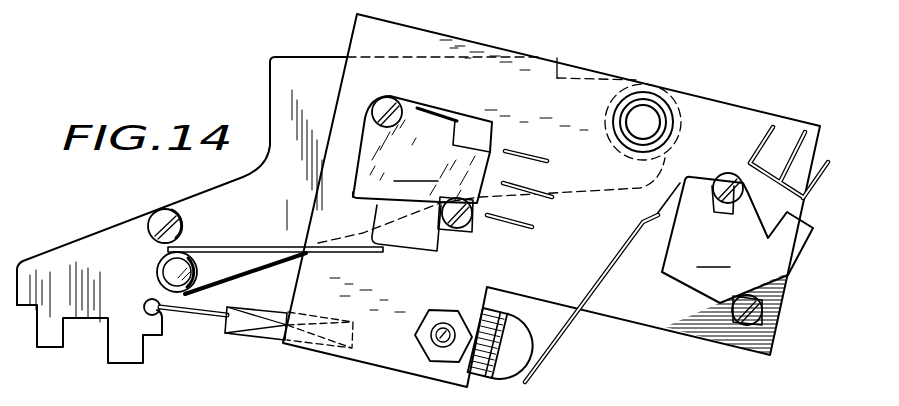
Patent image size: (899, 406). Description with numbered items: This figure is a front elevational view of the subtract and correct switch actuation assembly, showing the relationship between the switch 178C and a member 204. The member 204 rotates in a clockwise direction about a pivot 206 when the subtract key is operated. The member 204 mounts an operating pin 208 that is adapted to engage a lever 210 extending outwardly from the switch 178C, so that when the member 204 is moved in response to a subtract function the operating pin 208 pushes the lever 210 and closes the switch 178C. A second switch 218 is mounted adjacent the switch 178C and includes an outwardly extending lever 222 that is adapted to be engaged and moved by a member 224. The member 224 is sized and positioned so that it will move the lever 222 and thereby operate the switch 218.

The member 204 is at (60, 243).
The pivot 206 is at (652, 117).
The operating pin 208 is at (158, 270).
The lever 210 is at (268, 246).
The switch 178C is at (452, 173).
The switch 218 is at (742, 239).
The lever 222 is at (561, 336).
The member 224 is at (513, 378).